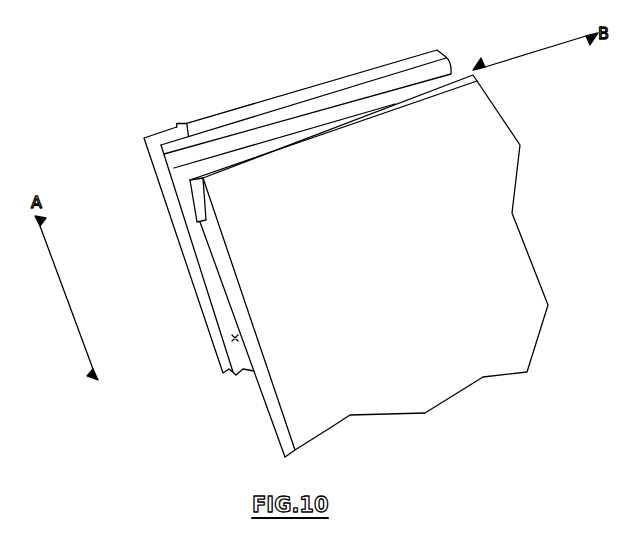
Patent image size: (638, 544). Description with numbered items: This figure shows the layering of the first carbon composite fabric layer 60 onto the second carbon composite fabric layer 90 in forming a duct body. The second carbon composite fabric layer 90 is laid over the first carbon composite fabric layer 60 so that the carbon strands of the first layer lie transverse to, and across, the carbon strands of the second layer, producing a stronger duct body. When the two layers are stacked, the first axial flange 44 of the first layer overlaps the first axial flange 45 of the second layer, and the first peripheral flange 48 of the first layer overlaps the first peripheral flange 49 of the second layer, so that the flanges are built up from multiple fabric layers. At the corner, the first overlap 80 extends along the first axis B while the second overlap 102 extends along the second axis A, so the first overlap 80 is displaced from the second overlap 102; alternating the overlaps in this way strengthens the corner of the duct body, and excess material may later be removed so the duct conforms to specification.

The first axial flange 44 is at (182, 232).
The first axial flange 45 is at (222, 260).
The first peripheral flange 48 is at (293, 107).
The first peripheral flange 49 is at (372, 115).
The first carbon composite fabric layer 60 is at (233, 339).
The first overlap 80 is at (177, 124).
The second carbon composite fabric layer 90 is at (384, 247).
The second overlap 102 is at (205, 196).